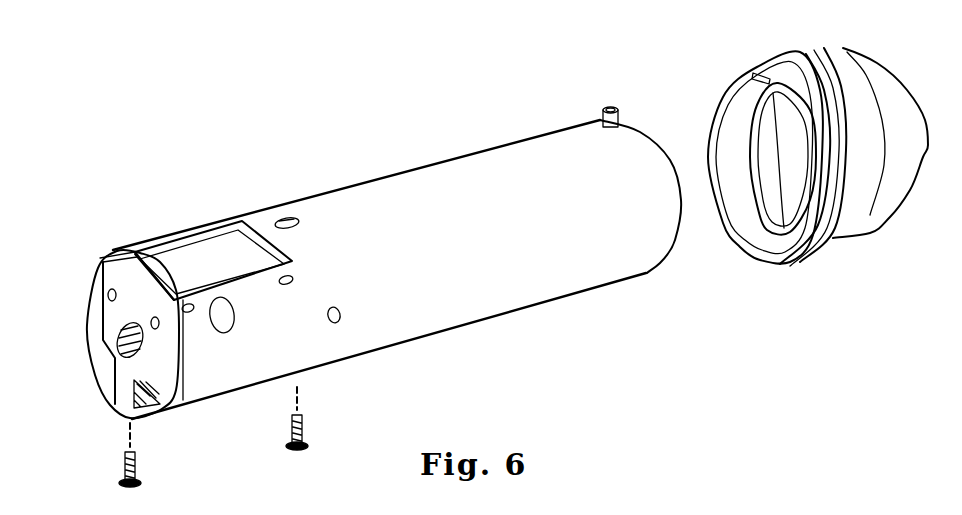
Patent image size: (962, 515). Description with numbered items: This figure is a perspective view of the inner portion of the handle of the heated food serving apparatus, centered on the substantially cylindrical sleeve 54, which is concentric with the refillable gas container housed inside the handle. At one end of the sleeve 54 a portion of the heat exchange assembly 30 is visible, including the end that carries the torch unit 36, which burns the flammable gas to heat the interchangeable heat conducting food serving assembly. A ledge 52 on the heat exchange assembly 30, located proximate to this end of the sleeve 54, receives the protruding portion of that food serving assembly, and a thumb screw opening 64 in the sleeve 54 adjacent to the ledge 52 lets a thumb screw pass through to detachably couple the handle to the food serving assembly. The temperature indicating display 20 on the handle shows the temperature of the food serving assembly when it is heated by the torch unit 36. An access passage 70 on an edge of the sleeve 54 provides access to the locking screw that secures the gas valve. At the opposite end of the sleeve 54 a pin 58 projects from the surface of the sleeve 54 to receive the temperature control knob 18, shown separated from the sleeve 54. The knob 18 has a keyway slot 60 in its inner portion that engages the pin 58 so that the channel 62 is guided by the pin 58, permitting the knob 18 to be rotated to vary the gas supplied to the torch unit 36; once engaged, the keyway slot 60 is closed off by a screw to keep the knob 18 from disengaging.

The temperature control knob 18 is at (833, 238).
The temperature indicating display 20 is at (224, 334).
The heat exchange assembly 30 is at (103, 318).
The torch unit 36 is at (120, 343).
The ledge 52 is at (213, 260).
The sleeve 54 is at (384, 303).
The pin 58 is at (606, 104).
The keyway slot 60 is at (753, 74).
The channel 62 is at (772, 224).
The thumb screw opening 64 is at (284, 217).
The access passage 70 is at (339, 322).